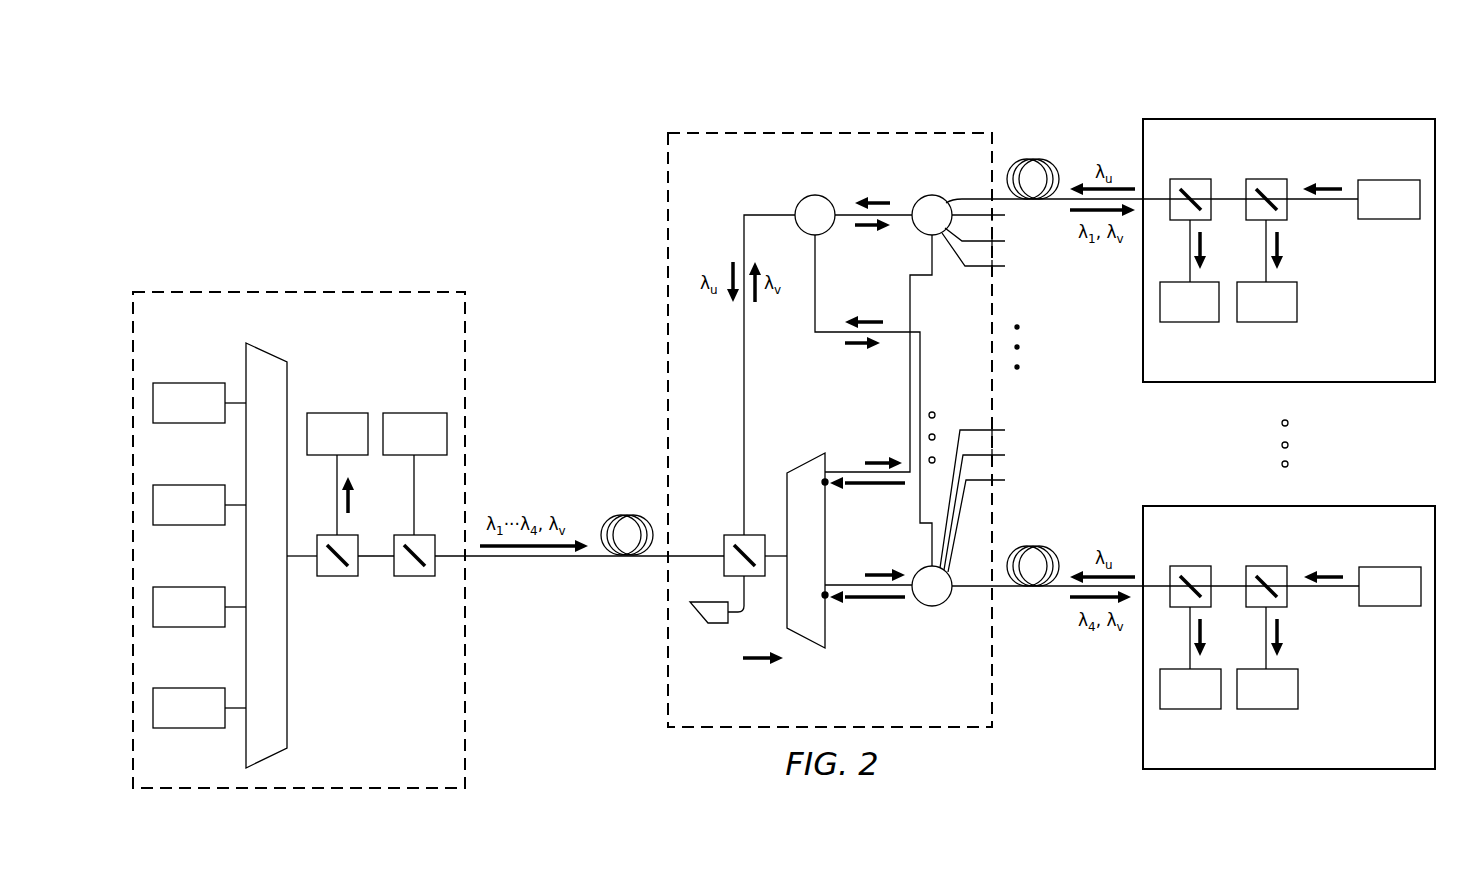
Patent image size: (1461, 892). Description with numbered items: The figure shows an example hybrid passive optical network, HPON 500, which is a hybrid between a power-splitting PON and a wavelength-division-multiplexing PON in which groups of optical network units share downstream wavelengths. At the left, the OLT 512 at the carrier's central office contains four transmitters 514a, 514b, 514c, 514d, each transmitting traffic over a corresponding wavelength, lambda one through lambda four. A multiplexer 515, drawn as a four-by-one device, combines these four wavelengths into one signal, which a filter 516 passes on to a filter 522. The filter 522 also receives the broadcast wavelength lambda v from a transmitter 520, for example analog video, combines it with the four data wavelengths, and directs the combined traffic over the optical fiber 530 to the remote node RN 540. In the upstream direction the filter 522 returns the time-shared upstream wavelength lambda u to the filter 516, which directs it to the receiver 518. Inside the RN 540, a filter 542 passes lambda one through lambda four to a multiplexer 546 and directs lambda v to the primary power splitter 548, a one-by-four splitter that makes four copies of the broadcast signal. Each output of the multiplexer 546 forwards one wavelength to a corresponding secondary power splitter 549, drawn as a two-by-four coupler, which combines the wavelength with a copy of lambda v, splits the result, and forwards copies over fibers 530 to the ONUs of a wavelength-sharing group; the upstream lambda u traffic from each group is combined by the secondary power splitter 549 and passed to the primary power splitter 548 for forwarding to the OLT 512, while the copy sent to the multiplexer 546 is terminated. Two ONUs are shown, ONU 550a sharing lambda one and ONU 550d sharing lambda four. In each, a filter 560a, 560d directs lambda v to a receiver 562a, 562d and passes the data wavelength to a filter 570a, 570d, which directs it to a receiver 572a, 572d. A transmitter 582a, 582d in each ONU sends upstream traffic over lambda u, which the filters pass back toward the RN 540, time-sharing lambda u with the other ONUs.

The HPON 500 is at (414, 144).
The OLT 512 is at (232, 283).
The transmitter 514a is at (190, 383).
The transmitter 514b is at (190, 485).
The transmitter 514c is at (190, 627).
The transmitter 514d is at (190, 728).
The multiplexer 515 is at (268, 351).
The filter 516 is at (344, 577).
The receiver 518 is at (340, 413).
The transmitter 520 is at (418, 413).
The filter 522 is at (421, 577).
The optical fiber 530 is at (622, 515).
The RN 540 is at (878, 124).
The filter 542 is at (735, 535).
The multiplexer 546 is at (805, 464).
The primary power splitter 548 is at (808, 196).
The secondary power splitter 549 is at (925, 196).
The ONU 550a is at (1322, 108).
The ONU 550d is at (1322, 782).
The filter 560a is at (1190, 178).
The filter 560d is at (1190, 565).
The filter 570a is at (1266, 178).
The filter 570d is at (1266, 565).
The receiver 562a is at (1200, 322).
The receiver 562d is at (1200, 709).
The receiver 572a is at (1277, 322).
The receiver 572d is at (1277, 709).
The transmitter 582a is at (1388, 219).
The transmitter 582d is at (1388, 606).